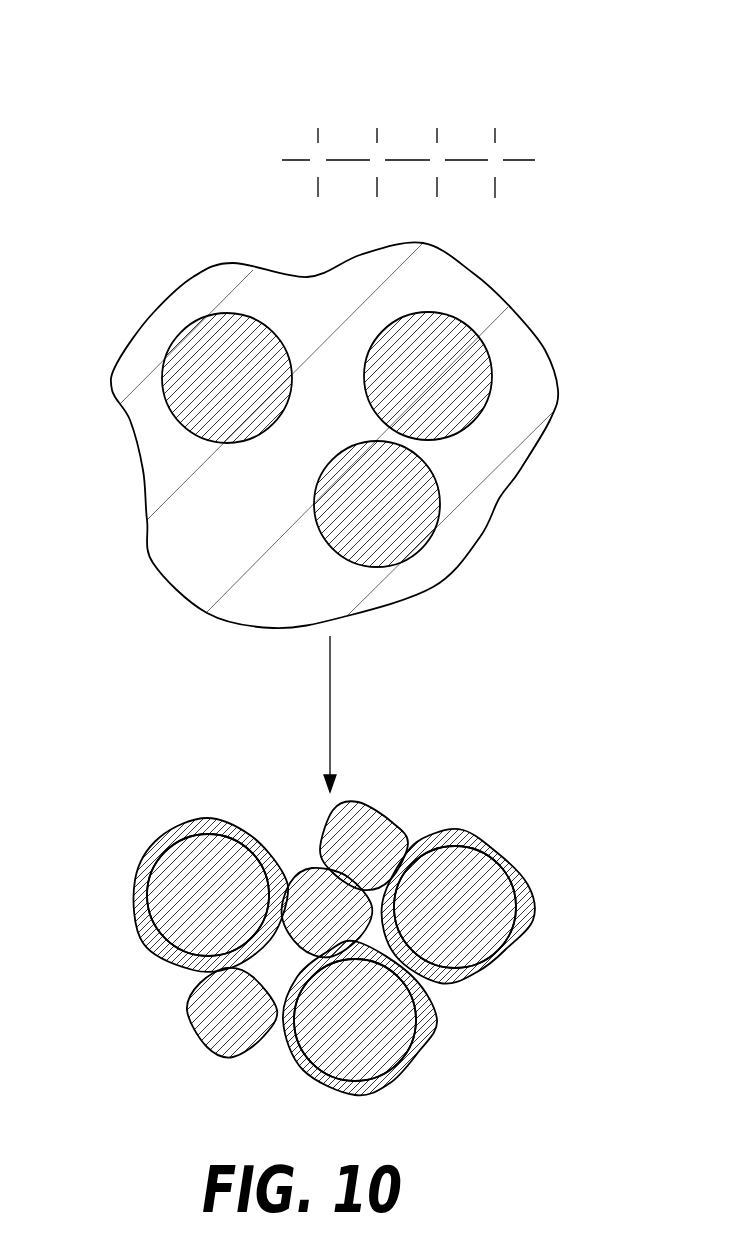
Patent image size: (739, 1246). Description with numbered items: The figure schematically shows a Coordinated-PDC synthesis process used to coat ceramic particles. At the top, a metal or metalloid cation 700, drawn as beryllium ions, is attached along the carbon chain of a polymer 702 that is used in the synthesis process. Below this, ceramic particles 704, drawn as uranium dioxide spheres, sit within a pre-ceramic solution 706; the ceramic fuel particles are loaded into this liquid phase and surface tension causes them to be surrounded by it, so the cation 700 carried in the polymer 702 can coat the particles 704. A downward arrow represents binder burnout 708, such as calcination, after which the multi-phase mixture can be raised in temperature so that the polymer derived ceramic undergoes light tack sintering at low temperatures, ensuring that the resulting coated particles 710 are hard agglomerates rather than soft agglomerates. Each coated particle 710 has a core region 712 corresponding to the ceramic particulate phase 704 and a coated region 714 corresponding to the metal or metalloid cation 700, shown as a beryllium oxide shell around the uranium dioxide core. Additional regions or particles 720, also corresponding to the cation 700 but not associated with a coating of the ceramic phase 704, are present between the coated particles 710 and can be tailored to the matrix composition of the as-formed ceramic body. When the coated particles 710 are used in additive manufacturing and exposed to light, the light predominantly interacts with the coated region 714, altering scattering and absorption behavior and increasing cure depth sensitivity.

The metal or metalloid cation 700 is at (380, 90).
The polymer 702 is at (292, 140).
The ceramic particles 704 is at (328, 492).
The pre-ceramic solution 706 is at (505, 538).
The binder burnout 708 is at (158, 712).
The coated particles 710 is at (277, 956).
The core region 712 is at (167, 917).
The coated region 714 is at (160, 955).
The additional regions or particles 720 is at (197, 1028).